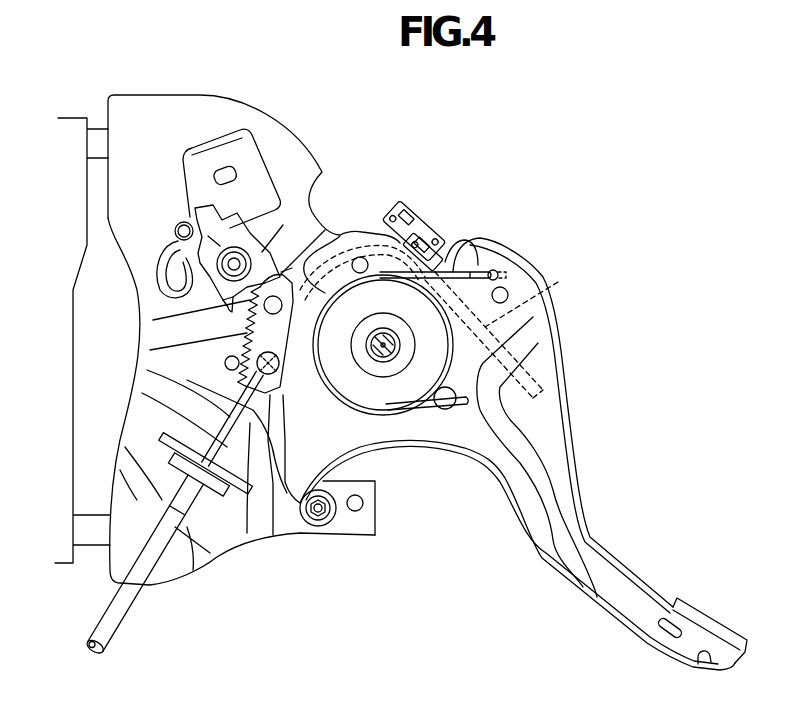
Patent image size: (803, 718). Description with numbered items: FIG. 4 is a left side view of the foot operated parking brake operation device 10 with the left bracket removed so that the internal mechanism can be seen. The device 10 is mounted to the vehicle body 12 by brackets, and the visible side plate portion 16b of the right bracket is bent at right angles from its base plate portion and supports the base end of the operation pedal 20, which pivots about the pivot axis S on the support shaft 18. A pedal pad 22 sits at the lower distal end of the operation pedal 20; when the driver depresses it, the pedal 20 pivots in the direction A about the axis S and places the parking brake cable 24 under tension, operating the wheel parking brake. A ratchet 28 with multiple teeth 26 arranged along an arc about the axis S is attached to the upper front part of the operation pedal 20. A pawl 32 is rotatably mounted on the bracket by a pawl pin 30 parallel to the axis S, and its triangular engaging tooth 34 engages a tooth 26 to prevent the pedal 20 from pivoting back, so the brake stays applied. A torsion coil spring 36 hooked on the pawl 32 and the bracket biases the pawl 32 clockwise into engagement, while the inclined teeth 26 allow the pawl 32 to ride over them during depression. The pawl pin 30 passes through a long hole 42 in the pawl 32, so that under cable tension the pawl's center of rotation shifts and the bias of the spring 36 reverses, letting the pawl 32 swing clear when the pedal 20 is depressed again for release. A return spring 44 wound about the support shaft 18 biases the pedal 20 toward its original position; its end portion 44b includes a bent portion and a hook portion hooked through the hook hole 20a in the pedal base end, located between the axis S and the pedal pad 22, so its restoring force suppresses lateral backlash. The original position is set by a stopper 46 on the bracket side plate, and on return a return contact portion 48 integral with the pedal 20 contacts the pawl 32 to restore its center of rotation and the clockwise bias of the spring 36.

The foot operated parking brake operation device 10 is at (510, 143).
The vehicle body 12 is at (66, 118).
The side plate portion 16b is at (365, 522).
The support shaft 18 is at (385, 343).
The operation pedal 20 is at (573, 515).
The hook hole 20a is at (505, 252).
The pedal pad 22 is at (690, 600).
The parking brake cable 24 is at (112, 624).
The teeth 26 is at (242, 352).
The ratchet 28 is at (255, 368).
The pawl pin 30 is at (212, 264).
The pawl 32 is at (192, 208).
The engaging tooth 34 is at (320, 243).
The torsion coil spring 36 is at (175, 233).
The long hole 42 is at (281, 272).
The return spring 44 is at (460, 372).
The end portion 44b is at (477, 263).
The stopper 46 is at (318, 517).
The return contact portion 48 is at (237, 312).
The pivot axis S is at (385, 355).
The direction A is at (763, 660).